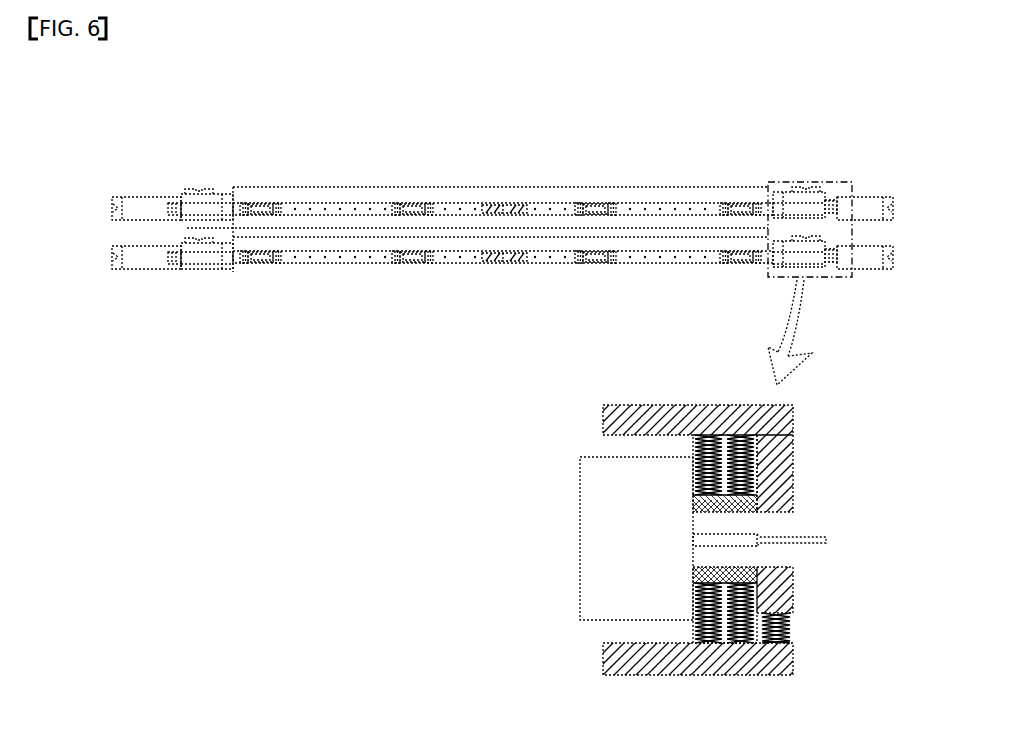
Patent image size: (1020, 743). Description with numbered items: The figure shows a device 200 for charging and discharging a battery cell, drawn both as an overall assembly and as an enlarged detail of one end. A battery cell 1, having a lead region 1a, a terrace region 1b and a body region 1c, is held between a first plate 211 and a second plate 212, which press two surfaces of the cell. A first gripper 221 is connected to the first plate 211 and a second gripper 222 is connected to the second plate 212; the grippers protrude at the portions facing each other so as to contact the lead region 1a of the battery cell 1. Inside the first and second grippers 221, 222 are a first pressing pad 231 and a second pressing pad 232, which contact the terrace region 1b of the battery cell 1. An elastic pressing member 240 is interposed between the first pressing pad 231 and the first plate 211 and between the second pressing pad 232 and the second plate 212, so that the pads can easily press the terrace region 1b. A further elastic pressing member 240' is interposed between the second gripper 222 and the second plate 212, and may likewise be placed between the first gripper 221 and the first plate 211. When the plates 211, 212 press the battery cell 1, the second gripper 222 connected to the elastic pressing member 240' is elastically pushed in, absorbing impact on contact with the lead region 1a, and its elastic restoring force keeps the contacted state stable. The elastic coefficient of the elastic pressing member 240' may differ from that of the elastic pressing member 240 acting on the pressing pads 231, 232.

The device for charging and discharging a battery cell 200 is at (189, 125).
The battery cell 1 is at (487, 285).
The lead region 1a is at (826, 540).
The terrace region 1b is at (740, 533).
The body region 1c is at (649, 553).
The first plate 211 is at (603, 415).
The second plate 212 is at (603, 657).
The first gripper 221 is at (793, 453).
The second gripper 222 is at (793, 609).
The first pressing pad 231 is at (692, 500).
The second pressing pad 232 is at (692, 572).
The elastic pressing member 240 is at (633, 613).
The elastic pressing member 240' is at (816, 636).